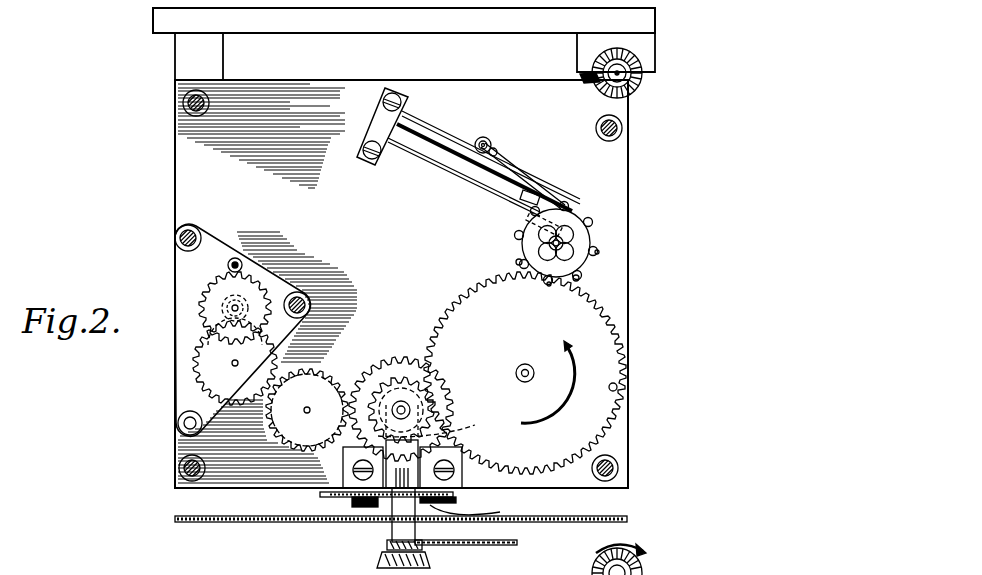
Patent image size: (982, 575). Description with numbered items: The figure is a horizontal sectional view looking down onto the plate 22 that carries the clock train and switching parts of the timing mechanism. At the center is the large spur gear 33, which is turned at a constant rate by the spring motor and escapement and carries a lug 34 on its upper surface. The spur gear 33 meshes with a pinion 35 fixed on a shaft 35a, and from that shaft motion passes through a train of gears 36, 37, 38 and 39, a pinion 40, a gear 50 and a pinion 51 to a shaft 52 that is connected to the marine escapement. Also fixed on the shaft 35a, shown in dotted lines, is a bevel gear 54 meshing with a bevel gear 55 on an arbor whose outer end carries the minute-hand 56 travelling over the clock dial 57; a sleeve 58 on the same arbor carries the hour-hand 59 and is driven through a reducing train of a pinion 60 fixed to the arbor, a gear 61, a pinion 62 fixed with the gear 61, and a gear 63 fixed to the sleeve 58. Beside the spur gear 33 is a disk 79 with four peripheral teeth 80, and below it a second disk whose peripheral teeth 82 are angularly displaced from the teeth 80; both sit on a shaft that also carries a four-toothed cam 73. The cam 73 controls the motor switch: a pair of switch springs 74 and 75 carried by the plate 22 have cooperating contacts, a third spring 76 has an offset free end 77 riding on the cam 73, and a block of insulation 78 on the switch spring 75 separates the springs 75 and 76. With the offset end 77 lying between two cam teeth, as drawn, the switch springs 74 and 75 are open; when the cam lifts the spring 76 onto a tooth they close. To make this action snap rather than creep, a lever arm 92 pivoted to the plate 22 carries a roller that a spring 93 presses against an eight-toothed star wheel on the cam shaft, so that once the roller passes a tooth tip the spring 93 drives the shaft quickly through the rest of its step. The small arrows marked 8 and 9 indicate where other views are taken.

The section arrow 8 is at (508, 483).
The section arrow 9 is at (564, 167).
The plate 22 is at (401, 284).
The spur gear 33 is at (595, 353).
The lug 34 is at (618, 387).
The pinion 35 is at (430, 408).
The shaft 35a is at (410, 411).
The gear 36 is at (390, 368).
The gear 37 is at (333, 376).
The gear 38 is at (307, 410).
The gear 39 is at (208, 375).
The pinion 40 is at (221, 312).
The gear 50 is at (224, 282).
The pinion 51 is at (228, 263).
The shaft 52 is at (250, 263).
The bevel gear 54 is at (425, 398).
The bevel gear 55 is at (475, 428).
The minute-hand 56 is at (388, 546).
The clock dial 57 is at (582, 516).
The sleeve 58 is at (416, 533).
The hour-hand 59 is at (503, 546).
The pinion 60 is at (457, 500).
The gear 61 is at (322, 494).
The pinion 62 is at (352, 502).
The gear 63 is at (476, 506).
The four-toothed cam 73 is at (538, 247).
The switch spring 74 is at (452, 146).
The switch spring 75 is at (452, 152).
The third spring 76 is at (468, 168).
The offset free end 77 is at (536, 222).
The block of insulation 78 is at (522, 198).
The disk 79 is at (582, 240).
The peripheral teeth 80 is at (600, 252).
The peripheral teeth 82 is at (516, 263).
The lever arm 92 is at (518, 172).
The spring 93 is at (488, 142).